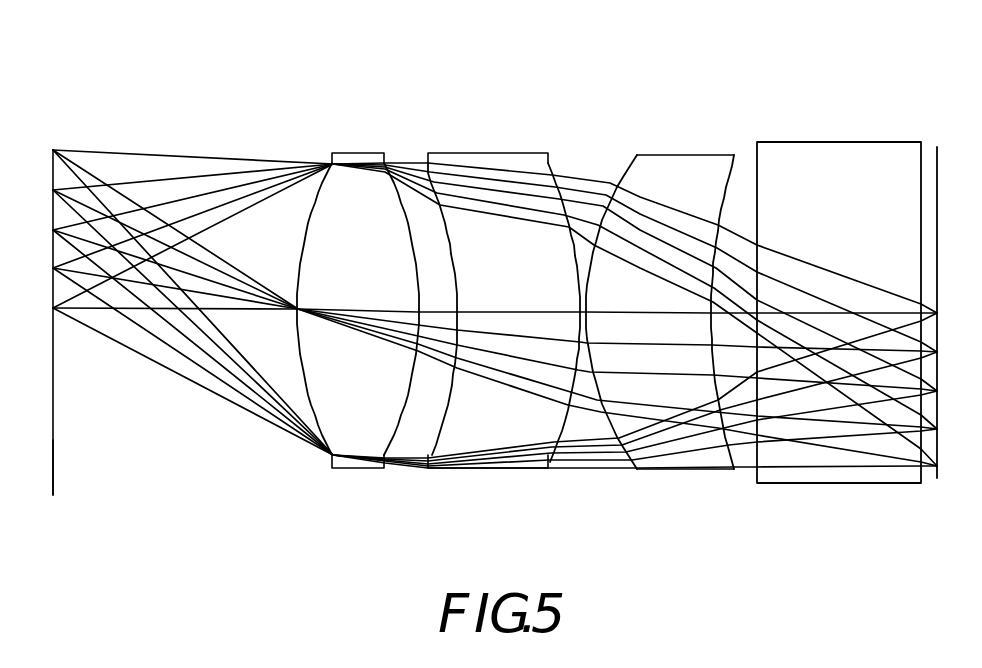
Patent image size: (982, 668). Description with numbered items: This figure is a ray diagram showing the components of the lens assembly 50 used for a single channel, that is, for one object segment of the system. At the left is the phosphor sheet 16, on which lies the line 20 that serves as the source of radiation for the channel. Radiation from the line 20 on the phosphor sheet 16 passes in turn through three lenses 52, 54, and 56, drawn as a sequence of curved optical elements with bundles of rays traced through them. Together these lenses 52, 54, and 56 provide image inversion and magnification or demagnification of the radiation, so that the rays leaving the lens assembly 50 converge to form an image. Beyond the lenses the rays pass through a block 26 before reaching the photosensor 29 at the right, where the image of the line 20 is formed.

The lens assembly 50 is at (274, 91).
The lens 52 is at (348, 160).
The lens 54 is at (490, 158).
The lens 56 is at (683, 163).
The prism block 26 is at (840, 152).
The photosensor 29 is at (937, 475).
The phosphor sheet 16 is at (53, 384).
The line 20 is at (53, 456).